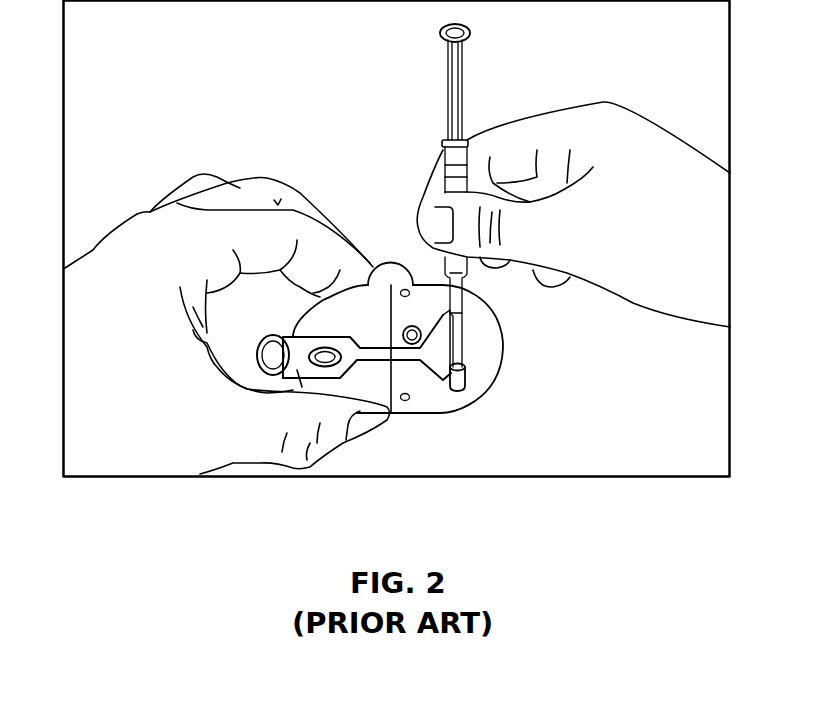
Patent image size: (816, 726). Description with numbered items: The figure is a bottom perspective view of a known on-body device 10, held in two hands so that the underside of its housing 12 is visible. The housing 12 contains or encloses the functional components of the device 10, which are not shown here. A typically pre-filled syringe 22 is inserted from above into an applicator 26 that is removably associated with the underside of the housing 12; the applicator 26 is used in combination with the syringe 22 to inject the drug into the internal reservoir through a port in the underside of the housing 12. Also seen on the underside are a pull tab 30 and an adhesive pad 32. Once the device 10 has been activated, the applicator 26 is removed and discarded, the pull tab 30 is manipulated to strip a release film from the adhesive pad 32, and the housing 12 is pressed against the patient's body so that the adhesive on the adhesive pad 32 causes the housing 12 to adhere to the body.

The on-body device 10 is at (513, 353).
The housing 12 is at (407, 413).
The syringe 22 is at (462, 85).
The applicator 26 is at (467, 378).
The pull tab 30 is at (383, 273).
The adhesive pad 32 is at (433, 393).